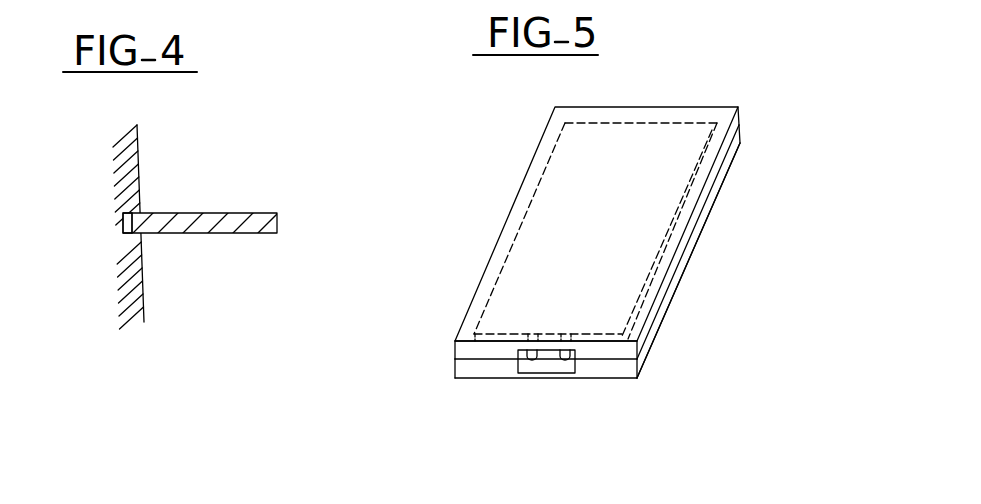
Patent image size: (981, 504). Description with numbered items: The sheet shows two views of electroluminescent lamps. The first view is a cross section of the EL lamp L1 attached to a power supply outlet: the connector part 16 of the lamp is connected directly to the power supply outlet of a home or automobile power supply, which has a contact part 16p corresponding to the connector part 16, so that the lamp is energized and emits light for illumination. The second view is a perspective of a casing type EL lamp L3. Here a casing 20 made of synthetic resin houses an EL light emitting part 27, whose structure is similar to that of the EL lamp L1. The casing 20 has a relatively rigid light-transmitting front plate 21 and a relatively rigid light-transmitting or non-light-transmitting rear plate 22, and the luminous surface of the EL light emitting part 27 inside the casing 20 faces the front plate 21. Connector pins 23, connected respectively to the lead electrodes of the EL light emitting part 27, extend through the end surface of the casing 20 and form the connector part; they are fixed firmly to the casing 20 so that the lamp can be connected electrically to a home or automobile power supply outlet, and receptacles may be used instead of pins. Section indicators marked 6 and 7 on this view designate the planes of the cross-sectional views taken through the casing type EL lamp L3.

In FIG. 4, the connector part 16 is at (143, 228).
In FIG. 4, the contact part 16p is at (110, 227).
In FIG. 4, the EL lamp L1 is at (213, 210).
In FIG. 5, the casing type EL lamp L3 is at (690, 280).
In FIG. 5, the casing 20 is at (676, 237).
In FIG. 5, the front plate 21 is at (732, 128).
In FIG. 5, the rear plate 22 is at (727, 165).
In FIG. 5, the connector pins 23 is at (565, 362).
In FIG. 5, the EL light emitting part 27 is at (652, 147).
In FIG. 5, the section line 6- 6 is at (507, 213).
In FIG. 5, the section line 7- 7 is at (452, 338).